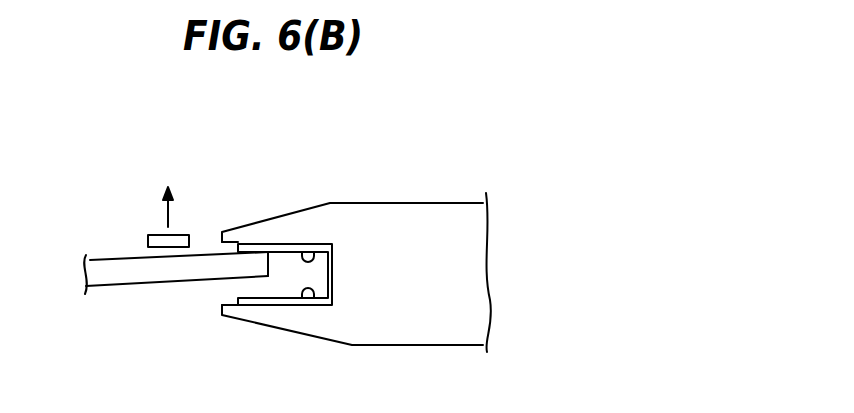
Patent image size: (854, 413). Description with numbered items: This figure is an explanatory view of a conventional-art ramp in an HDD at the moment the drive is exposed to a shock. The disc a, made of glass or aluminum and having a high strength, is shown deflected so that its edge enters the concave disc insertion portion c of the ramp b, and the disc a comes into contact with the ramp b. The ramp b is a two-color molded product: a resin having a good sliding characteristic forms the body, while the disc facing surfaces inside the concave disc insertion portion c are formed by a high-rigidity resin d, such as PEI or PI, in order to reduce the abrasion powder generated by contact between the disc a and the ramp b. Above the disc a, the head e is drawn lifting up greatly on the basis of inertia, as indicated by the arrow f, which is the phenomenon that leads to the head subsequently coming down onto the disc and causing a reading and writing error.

The disc a is at (102, 272).
The ramp b is at (413, 235).
The concave disc insertion portion c is at (283, 278).
The high-rigidity resin d is at (311, 250).
The head e is at (160, 238).
The arrow indicating head lift direction f is at (169, 187).